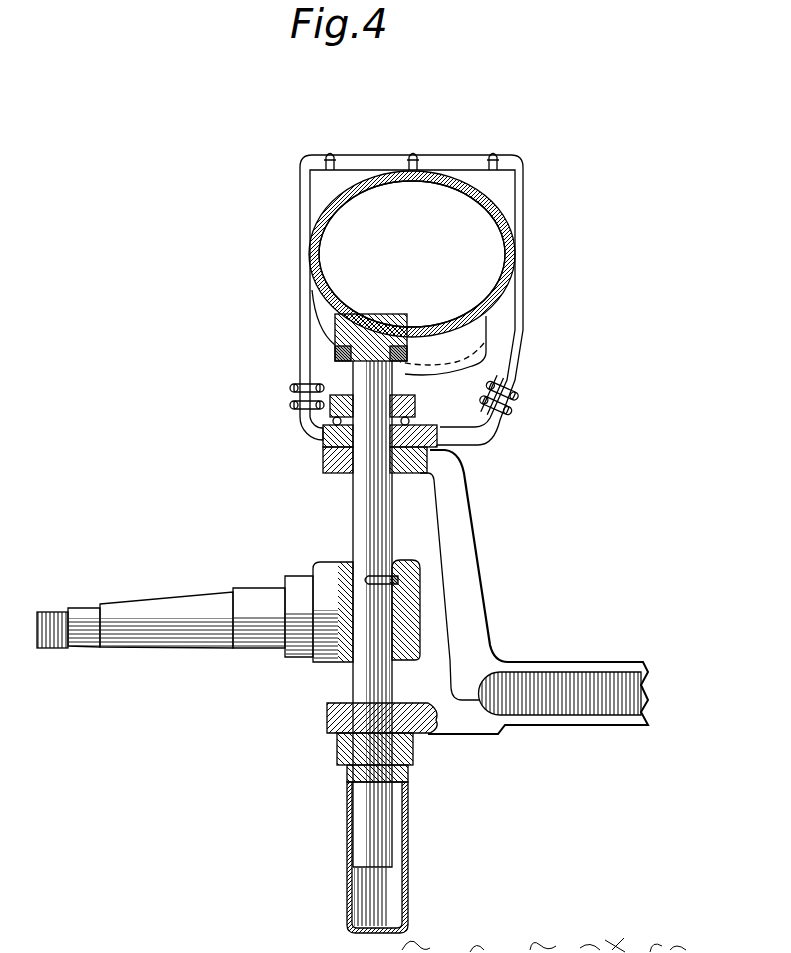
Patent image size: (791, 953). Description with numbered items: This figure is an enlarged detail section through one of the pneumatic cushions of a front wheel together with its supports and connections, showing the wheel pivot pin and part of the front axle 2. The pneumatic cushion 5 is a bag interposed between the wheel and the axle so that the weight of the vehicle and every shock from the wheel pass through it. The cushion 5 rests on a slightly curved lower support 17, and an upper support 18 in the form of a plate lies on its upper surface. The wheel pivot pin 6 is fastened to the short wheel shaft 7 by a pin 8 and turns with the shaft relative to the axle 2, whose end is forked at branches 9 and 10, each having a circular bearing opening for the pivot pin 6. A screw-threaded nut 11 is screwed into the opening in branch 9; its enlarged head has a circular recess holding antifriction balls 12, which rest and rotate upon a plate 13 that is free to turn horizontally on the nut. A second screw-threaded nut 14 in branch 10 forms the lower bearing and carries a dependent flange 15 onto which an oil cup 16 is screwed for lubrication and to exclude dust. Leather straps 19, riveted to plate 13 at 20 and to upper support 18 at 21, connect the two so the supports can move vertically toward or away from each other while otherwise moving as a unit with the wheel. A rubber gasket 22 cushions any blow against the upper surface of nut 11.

The front axle 2 is at (583, 662).
The pneumatic cushion 5 is at (493, 213).
The wheel pivot pin 6 is at (366, 500).
The wheel shaft 7 is at (168, 650).
The pin 8 is at (384, 580).
The fork branch 9 is at (461, 503).
The fork branch 10 is at (445, 722).
The screw-threaded nut 11 is at (416, 406).
The antifriction balls 12 is at (322, 430).
The plate 13 is at (324, 450).
The screw-threaded nut 14 is at (336, 746).
The dependent flange 15 is at (406, 778).
The oil cup 16 is at (408, 890).
The lower support 17 is at (466, 336).
The upper support 18 is at (478, 175).
The straps 19 is at (306, 228).
The rivets 20 is at (290, 405).
The rivets 21 is at (490, 152).
The rubber gasket 22 is at (340, 355).